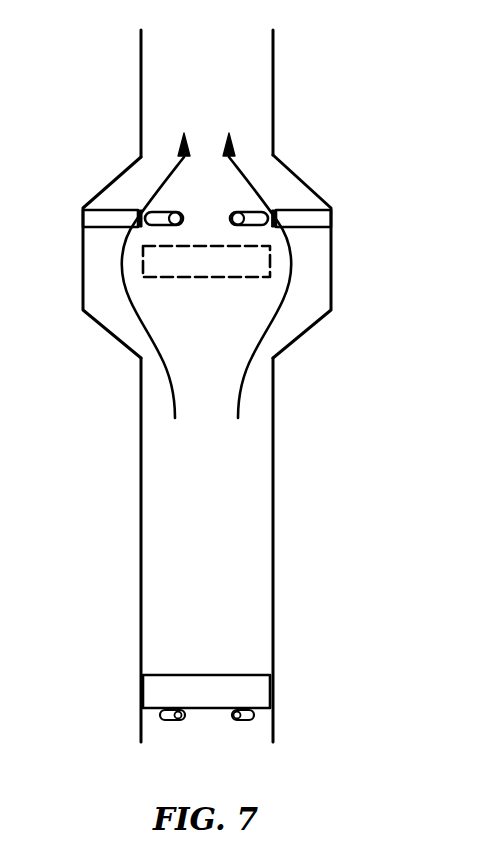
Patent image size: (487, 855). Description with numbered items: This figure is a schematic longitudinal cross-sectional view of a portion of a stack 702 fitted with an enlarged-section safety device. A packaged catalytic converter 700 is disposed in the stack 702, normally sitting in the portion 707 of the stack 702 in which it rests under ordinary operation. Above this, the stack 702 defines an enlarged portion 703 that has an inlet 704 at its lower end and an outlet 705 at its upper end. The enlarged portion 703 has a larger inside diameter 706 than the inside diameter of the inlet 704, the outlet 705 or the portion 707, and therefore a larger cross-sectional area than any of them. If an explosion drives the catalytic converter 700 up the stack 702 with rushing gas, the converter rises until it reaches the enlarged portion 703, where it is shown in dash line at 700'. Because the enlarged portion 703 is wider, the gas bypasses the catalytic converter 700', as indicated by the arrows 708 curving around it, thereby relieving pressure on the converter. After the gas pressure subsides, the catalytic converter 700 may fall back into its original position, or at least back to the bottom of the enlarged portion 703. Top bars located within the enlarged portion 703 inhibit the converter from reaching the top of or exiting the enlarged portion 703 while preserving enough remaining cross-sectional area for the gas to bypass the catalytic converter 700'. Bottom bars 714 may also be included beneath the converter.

The packaged catalytic converter 700 is at (172, 691).
The catalytic converter in enlarged portion 700' is at (206, 226).
The stack 702 is at (141, 514).
The enlarged portion 703 is at (390, 158).
The inlet 704 is at (255, 373).
The outlet 705 is at (257, 157).
The inside diameter 706 is at (331, 293).
The portion of the stack 707 is at (390, 363).
The arrows 708 is at (238, 395).
The bottom bars 714 is at (236, 719).